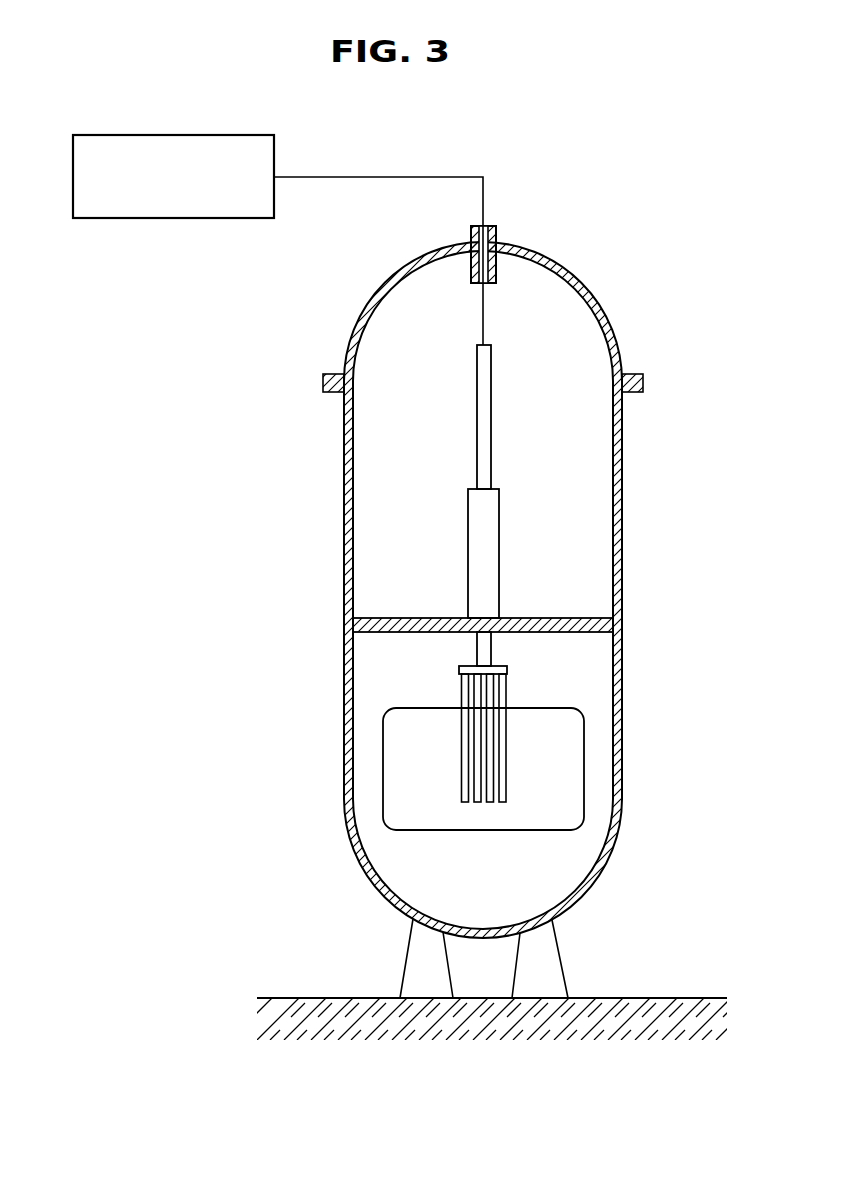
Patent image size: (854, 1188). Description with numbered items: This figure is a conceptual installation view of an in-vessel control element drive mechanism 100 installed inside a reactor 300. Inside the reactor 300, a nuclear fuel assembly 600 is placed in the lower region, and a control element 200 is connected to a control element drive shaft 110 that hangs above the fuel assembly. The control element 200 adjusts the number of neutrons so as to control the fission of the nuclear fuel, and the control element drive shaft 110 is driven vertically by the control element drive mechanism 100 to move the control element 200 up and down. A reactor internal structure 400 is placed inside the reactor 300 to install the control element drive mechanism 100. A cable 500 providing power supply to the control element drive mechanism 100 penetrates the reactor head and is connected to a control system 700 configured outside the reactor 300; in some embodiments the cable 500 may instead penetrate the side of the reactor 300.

The control element drive mechanism 100 is at (489, 555).
The control element drive shaft 110 is at (484, 648).
The control element 200 is at (506, 690).
The reactor 300 is at (568, 272).
The reactor internal structure 400 is at (605, 626).
The cable 500 is at (483, 327).
The nuclear fuel assembly 600 is at (575, 764).
The control system 700 is at (173, 218).